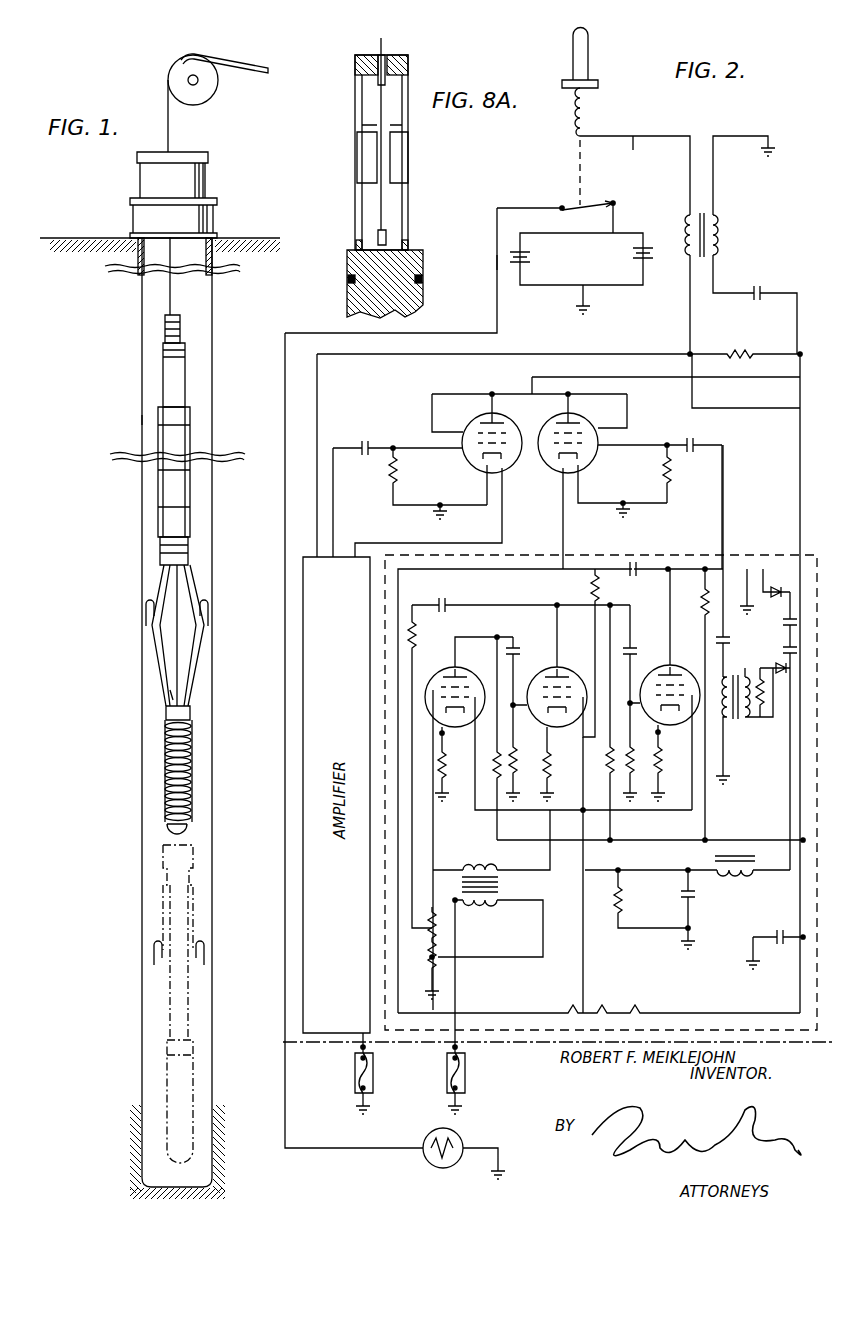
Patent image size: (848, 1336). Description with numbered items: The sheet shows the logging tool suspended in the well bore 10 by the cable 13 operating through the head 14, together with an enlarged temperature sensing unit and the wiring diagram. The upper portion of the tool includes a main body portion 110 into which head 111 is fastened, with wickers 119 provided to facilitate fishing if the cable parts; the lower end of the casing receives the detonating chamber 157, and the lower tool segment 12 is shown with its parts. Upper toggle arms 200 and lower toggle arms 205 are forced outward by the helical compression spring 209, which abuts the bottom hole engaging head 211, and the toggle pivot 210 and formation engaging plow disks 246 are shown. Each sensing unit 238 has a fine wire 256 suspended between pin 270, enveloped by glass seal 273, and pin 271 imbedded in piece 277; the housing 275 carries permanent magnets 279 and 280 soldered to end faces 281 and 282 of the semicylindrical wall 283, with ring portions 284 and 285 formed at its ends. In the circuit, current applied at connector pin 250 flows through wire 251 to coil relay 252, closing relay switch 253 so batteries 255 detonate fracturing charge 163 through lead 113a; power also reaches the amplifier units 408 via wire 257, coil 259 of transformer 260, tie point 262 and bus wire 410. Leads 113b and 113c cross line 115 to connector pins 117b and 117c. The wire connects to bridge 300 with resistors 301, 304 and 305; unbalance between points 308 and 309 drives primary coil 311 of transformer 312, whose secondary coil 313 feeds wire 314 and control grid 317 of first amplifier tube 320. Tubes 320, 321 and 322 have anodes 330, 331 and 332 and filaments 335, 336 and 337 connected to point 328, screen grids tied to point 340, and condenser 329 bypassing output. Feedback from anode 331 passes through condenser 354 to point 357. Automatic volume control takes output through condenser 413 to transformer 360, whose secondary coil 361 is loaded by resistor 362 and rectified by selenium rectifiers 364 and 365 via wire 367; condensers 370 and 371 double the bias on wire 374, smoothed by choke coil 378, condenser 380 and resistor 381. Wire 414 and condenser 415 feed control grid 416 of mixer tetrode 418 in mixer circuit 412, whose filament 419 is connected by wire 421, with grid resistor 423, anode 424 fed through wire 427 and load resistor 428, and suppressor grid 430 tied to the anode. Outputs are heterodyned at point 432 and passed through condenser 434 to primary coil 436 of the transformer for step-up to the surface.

In FIG. 1, the well bore 10 is at (142, 420).
In FIG. 1, the logging instrument 12 is at (165, 345).
In FIG. 1, the cable 13 is at (172, 133).
In FIG. 1, the head 14 is at (150, 179).
In FIG. 1, the main body portion 110 is at (180, 493).
In FIG. 1, the head 111 is at (178, 418).
In FIG. 1, the wickers 119 is at (182, 320).
In FIG. 1, the detonating chamber 157 is at (168, 530).
In FIG. 1, the upper toggle arms 200 is at (190, 568).
In FIG. 1, the lower toggle arms 205 is at (188, 702).
In FIG. 1, the helical compression spring 209 is at (190, 755).
In FIG. 1, the arm pivot 210 is at (170, 693).
In FIG. 1, the bottom hole engaging head 211 is at (188, 829).
In FIG. 1, the plow disk 246 is at (148, 620).
In FIG. 2, the connector pin 250 is at (590, 47).
In FIG. 2, the wire 251 is at (585, 95).
In FIG. 2, the coil relay 252 is at (585, 118).
In FIG. 2, the relay switch 253 is at (566, 198).
In FIG. 2, the batteries 255 is at (530, 256).
In FIG. 8A, the fine wire 256 is at (376, 125).
In FIG. 2, the fine wire 256 is at (355, 1078).
In FIG. 2, the wire 257 is at (635, 175).
In FIG. 2, the coil 259 is at (688, 226).
In FIG. 2, the transformer 260 is at (730, 218).
In FIG. 2, the tie point 262 is at (690, 346).
In FIG. 8A, the pin 270 is at (378, 57).
In FIG. 8A, the pin 271 is at (388, 238).
In FIG. 8A, the glass seal 273 is at (390, 57).
In FIG. 8A, the housing 275 is at (348, 100).
In FIG. 8A, the piece 277 is at (350, 253).
In FIG. 8A, the permanent magnet 279 is at (362, 168).
In FIG. 8A, the permanent magnet 280 is at (397, 170).
In FIG. 8A, the vertical end face 281 is at (361, 113).
In FIG. 8A, the vertical end face 282 is at (403, 125).
In FIG. 8A, the semicylindrical wall 283 is at (400, 88).
In FIG. 8A, the ring portion 284 is at (357, 68).
In FIG. 8A, the ring portion 285 is at (358, 243).
In FIG. 2, the bridge 300 is at (391, 936).
In FIG. 2, the resistor 301 is at (440, 915).
In FIG. 2, the resistor 304 is at (430, 978).
In FIG. 2, the resistor 305 is at (430, 948).
In FIG. 2, the point 308 is at (438, 959).
In FIG. 2, the point 309 is at (461, 897).
In FIG. 2, the primary coil 311 is at (495, 906).
In FIG. 2, the transformer 312 is at (463, 859).
In FIG. 2, the secondary coil 313 is at (486, 868).
In FIG. 2, the wire 314 is at (433, 829).
In FIG. 2, the control grid 317 is at (455, 700).
In FIG. 2, the first amplifier tube 320 is at (453, 656).
In FIG. 2, the amplifier tube 321 is at (574, 662).
In FIG. 2, the amplifier tube 322 is at (657, 653).
In FIG. 2, the point 328 is at (802, 838).
In FIG. 2, the condenser 329 is at (786, 942).
In FIG. 2, the anode 330 is at (462, 652).
In FIG. 2, the anode 331 is at (557, 665).
In FIG. 2, the anode 332 is at (673, 665).
In FIG. 2, the filament 335 is at (408, 648).
In FIG. 2, the filament 336 is at (606, 1010).
In FIG. 2, the filament 337 is at (640, 1010).
In FIG. 2, the point 340 is at (586, 1008).
In FIG. 2, the condenser 354 is at (445, 604).
In FIG. 2, the point 357 is at (436, 935).
In FIG. 2, the transformer 360 is at (743, 725).
In FIG. 2, the secondary coil 361 is at (750, 720).
In FIG. 2, the load resistor 362 is at (772, 710).
In FIG. 2, the selenium rectifier 364 is at (778, 585).
In FIG. 2, the selenium rectifier 365 is at (772, 668).
In FIG. 2, the wire 367 is at (788, 731).
In FIG. 2, the condenser 370 is at (790, 657).
In FIG. 2, the condenser 371 is at (760, 612).
In FIG. 2, the wire 374 is at (790, 799).
In FIG. 2, the choke coil 378 is at (742, 876).
In FIG. 2, the ripple bypass condenser 380 is at (692, 897).
In FIG. 2, the resistor 381 is at (624, 900).
In FIG. 2, the amplifier unit 408 is at (296, 596).
In FIG. 2, the bus wire 410 is at (569, 352).
In FIG. 2, the mixer circuit 412 is at (474, 393).
In FIG. 2, the condenser 413 is at (718, 638).
In FIG. 2, the wire 414 is at (722, 528).
In FIG. 2, the condenser 415 is at (695, 442).
In FIG. 2, the control grid 416 is at (560, 465).
In FIG. 2, the mixer tetrode 418 is at (476, 478).
In FIG. 2, the filament 419 is at (560, 470).
In FIG. 2, the connecting wire 421 is at (575, 536).
In FIG. 2, the grid resistor 423 is at (671, 480).
In FIG. 2, the anode 424 is at (478, 413).
In FIG. 2, the wire 427 is at (622, 382).
In FIG. 2, the anode load resistor 428 is at (743, 351).
In FIG. 2, the suppressor grid 430 is at (548, 396).
In FIG. 2, the point 432 is at (546, 393).
In FIG. 2, the condenser 434 is at (776, 280).
In FIG. 2, the primary coil 436 is at (720, 238).
In FIG. 2, the lead 113a is at (497, 262).
In FIG. 2, the lead 113b is at (460, 1001).
In FIG. 2, the lead 113c is at (363, 1040).
In FIG. 2, the line 115 is at (438, 1045).
In FIG. 2, the connector pin 117b is at (458, 1048).
In FIG. 2, the connector pin 117c is at (366, 1048).
In FIG. 2, the fracturing charge 163 is at (430, 1163).
In FIG. 2, the thermally responsive signal generator 238 is at (341, 1111).